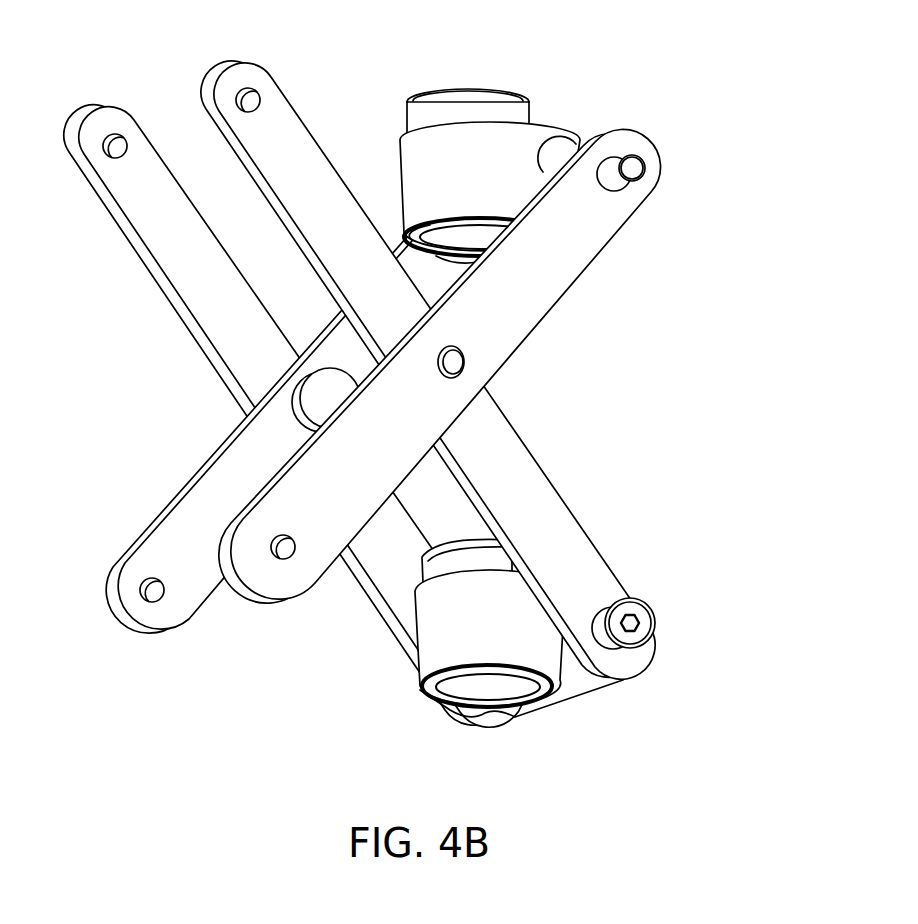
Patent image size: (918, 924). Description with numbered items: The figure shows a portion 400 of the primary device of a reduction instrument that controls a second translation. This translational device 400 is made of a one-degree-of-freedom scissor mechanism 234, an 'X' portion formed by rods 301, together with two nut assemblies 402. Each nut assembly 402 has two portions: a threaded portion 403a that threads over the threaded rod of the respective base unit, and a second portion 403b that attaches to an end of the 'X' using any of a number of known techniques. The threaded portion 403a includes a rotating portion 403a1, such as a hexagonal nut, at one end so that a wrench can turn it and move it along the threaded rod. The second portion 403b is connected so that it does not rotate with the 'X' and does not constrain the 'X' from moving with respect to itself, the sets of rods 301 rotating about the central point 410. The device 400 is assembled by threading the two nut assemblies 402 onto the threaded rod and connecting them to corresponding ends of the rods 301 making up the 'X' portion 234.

The portion of the primary device 400 is at (415, 386).
The scissor mechanism 234 is at (440, 366).
The rods 301 is at (139, 632).
The nut assembly 402 is at (512, 97).
The threaded portion 403a is at (473, 386).
The rotating portion 403a1 is at (410, 103).
The second portion 403b is at (567, 137).
The central point 410 is at (465, 360).